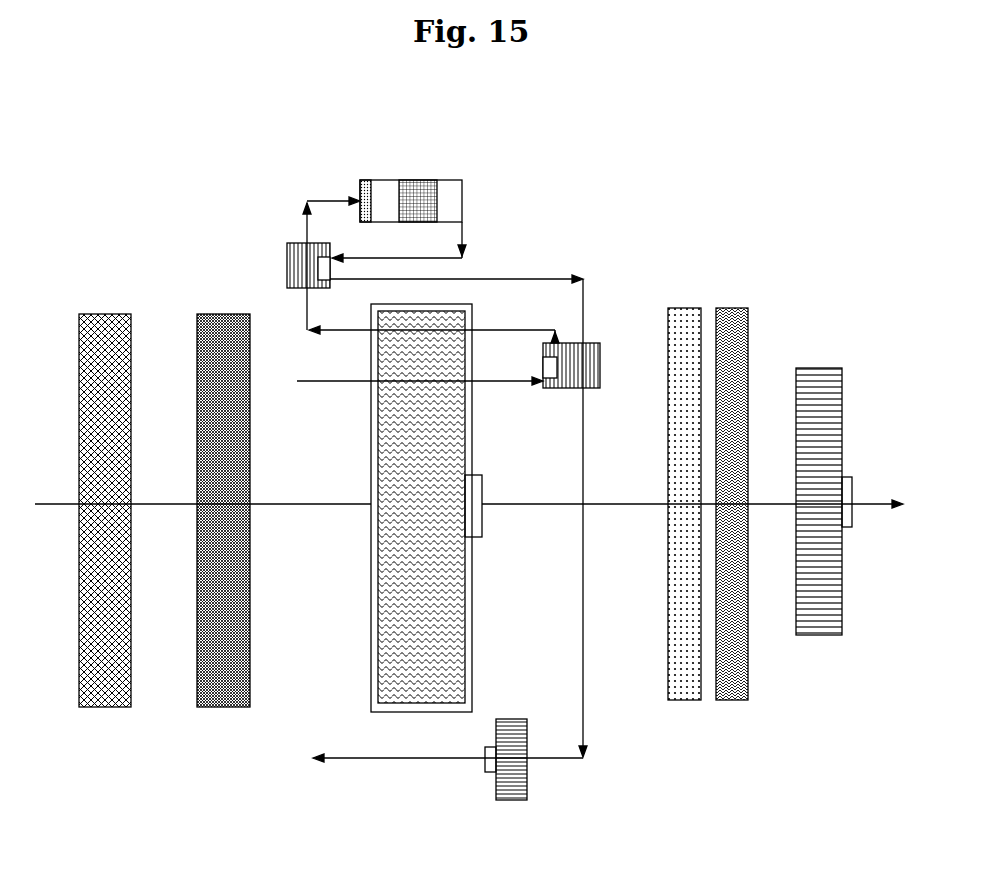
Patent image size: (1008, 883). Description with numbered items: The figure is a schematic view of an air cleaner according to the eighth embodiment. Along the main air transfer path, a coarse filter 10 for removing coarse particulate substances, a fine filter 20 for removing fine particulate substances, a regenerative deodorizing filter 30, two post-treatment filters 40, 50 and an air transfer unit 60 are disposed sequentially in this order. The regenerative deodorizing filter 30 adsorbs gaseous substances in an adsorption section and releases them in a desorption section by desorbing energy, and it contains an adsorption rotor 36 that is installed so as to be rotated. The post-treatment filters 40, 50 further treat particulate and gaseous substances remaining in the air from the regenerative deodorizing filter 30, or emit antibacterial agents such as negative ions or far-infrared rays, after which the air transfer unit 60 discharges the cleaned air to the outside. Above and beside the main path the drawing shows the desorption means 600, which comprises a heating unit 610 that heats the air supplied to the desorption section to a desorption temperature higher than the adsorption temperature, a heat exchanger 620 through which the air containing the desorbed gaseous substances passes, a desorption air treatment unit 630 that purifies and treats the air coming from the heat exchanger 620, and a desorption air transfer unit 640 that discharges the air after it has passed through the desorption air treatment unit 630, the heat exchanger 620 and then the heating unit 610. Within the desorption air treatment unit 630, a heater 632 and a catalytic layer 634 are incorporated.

The coarse filter 10 is at (108, 702).
The fine filter 20 is at (222, 702).
The regenerative deodorizing filter 30 is at (418, 716).
The adsorption rotor 36 is at (453, 630).
The post-treatment filter 40 is at (688, 698).
The post-treatment filter 50 is at (742, 698).
The air transfer unit 60 is at (825, 632).
The desorption means 600 is at (478, 213).
The heating unit 610 is at (582, 342).
The heat exchanger 620 is at (297, 265).
The desorption air treatment unit 630 is at (365, 156).
The heater 632 is at (360, 187).
The catalytic layer 634 is at (414, 190).
The desorption air transfer unit 640 is at (520, 783).